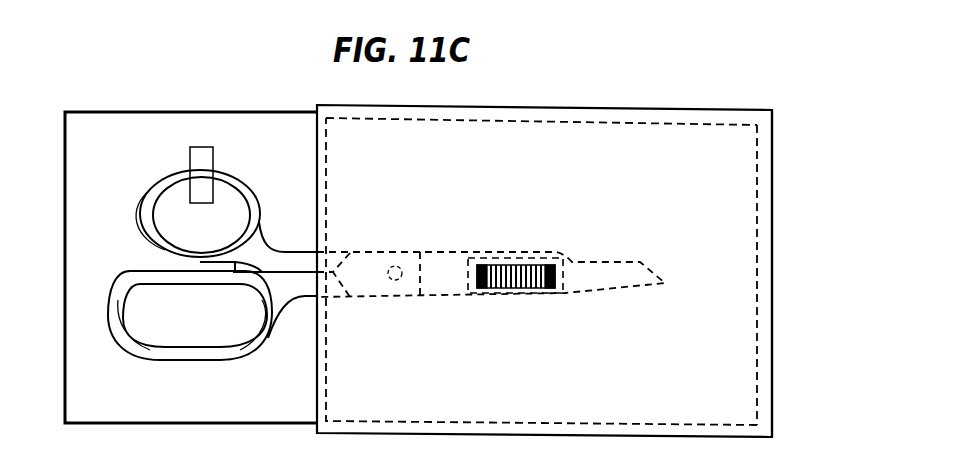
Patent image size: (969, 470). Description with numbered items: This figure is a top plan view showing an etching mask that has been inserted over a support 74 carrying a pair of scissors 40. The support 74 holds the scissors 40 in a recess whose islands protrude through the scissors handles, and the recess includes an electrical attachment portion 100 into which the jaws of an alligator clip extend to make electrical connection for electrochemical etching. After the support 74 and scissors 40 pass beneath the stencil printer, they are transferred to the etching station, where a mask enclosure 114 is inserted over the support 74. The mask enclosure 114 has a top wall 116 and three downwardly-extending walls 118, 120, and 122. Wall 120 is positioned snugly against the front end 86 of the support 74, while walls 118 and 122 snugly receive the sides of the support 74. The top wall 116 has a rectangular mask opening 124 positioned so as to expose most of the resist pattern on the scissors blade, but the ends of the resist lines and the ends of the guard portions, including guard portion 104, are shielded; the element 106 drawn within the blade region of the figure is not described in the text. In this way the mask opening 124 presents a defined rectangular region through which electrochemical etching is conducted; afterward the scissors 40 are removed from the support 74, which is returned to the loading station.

The support 74 is at (125, 125).
The scissors 40 is at (150, 235).
The electrical attachment portion 100 is at (203, 193).
The mask enclosure 114 is at (690, 100).
The downwardly-extending wall 118 is at (530, 117).
The downwardly-extending wall 120 is at (767, 240).
The front end 86 is at (758, 294).
The downwardly-extending wall 122 is at (326, 432).
The guard portion 104 is at (569, 262).
The pocket pivot portion 106 is at (468, 263).
The mask opening 124 is at (534, 289).
The top wall 116 is at (657, 359).